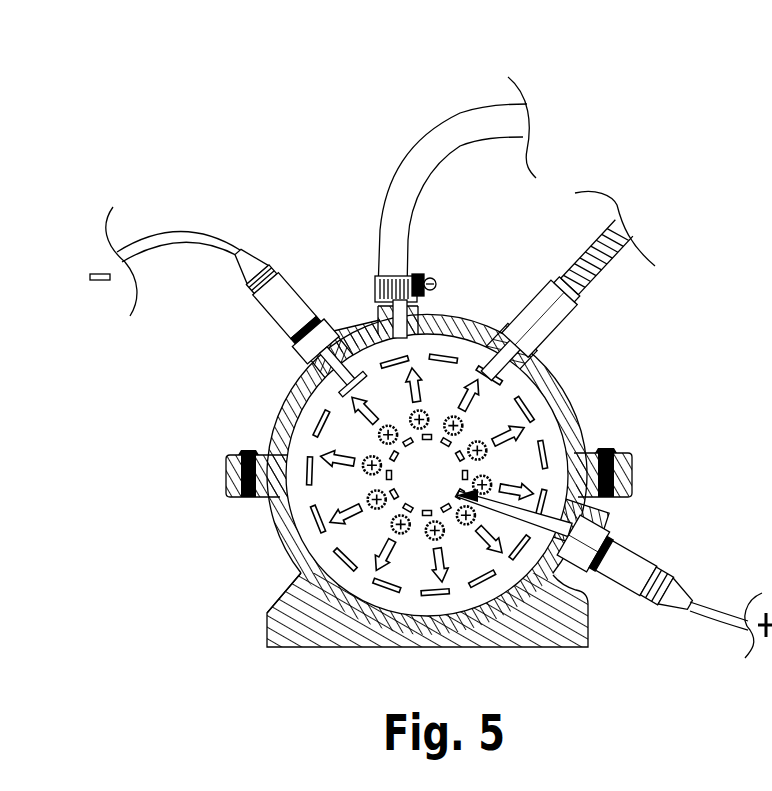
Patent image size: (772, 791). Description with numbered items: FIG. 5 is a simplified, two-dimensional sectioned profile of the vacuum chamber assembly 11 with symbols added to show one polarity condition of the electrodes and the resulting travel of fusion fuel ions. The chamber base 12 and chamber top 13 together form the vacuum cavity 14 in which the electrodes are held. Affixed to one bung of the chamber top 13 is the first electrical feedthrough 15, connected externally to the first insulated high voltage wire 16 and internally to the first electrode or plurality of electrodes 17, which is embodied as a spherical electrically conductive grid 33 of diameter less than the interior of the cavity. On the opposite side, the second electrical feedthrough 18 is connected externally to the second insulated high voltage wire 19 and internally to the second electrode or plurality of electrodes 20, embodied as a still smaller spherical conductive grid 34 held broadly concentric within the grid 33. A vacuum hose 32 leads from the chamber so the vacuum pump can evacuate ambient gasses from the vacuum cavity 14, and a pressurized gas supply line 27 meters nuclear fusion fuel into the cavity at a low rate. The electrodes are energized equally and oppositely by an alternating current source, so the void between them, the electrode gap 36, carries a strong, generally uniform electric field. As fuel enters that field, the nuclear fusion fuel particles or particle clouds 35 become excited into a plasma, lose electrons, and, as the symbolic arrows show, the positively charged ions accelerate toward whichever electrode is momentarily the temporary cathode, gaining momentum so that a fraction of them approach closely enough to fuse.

The vacuum chamber assembly 11 is at (255, 630).
The chamber base 12 is at (297, 555).
The chamber top 13 is at (553, 357).
The vacuum cavity 14 is at (555, 440).
The first electrical feedthrough 15 is at (298, 274).
The first insulated high voltage wire 16 is at (197, 212).
The first electrode or plurality of electrodes 17 is at (330, 381).
The second electrical feedthrough 18 is at (617, 614).
The second insulated high voltage wire 19 is at (721, 606).
The second electrode or plurality of electrodes 20 is at (480, 498).
The pressurized gas supply line 27 is at (552, 248).
The vacuum hose 32 is at (405, 150).
The spherical electrically conductive grid 33 is at (281, 368).
The spherical electrically conductive grid 34 is at (580, 513).
The nuclear fusion fuel particles or particle clouds 35 is at (360, 505).
The electrode gap 36 is at (348, 437).